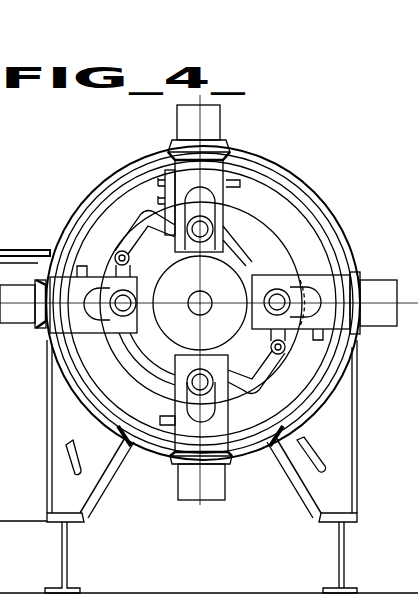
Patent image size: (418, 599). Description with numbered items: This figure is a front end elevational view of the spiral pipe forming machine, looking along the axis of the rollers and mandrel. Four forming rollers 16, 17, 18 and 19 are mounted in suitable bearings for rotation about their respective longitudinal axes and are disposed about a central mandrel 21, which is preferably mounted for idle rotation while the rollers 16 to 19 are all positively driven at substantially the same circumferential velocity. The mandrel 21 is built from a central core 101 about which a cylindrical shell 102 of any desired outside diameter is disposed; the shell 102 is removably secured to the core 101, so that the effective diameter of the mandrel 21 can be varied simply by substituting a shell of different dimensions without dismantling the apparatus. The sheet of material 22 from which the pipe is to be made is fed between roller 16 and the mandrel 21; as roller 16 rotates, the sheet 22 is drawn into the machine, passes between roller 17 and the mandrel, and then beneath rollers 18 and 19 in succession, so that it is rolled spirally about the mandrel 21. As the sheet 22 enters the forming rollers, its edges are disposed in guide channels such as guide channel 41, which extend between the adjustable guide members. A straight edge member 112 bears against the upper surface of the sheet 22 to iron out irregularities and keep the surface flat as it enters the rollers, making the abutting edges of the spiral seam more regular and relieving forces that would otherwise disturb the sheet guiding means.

The forming roller 16 is at (226, 233).
The forming roller 17 is at (293, 272).
The forming roller 18 is at (240, 336).
The forming roller 19 is at (118, 364).
The central mandrel 21 is at (172, 338).
The sheet of material 22 is at (166, 259).
The guide channel 41 is at (12, 251).
The central core 101 is at (201, 311).
The cylindrical shell 102 is at (226, 271).
The straight edge member 112 is at (164, 190).